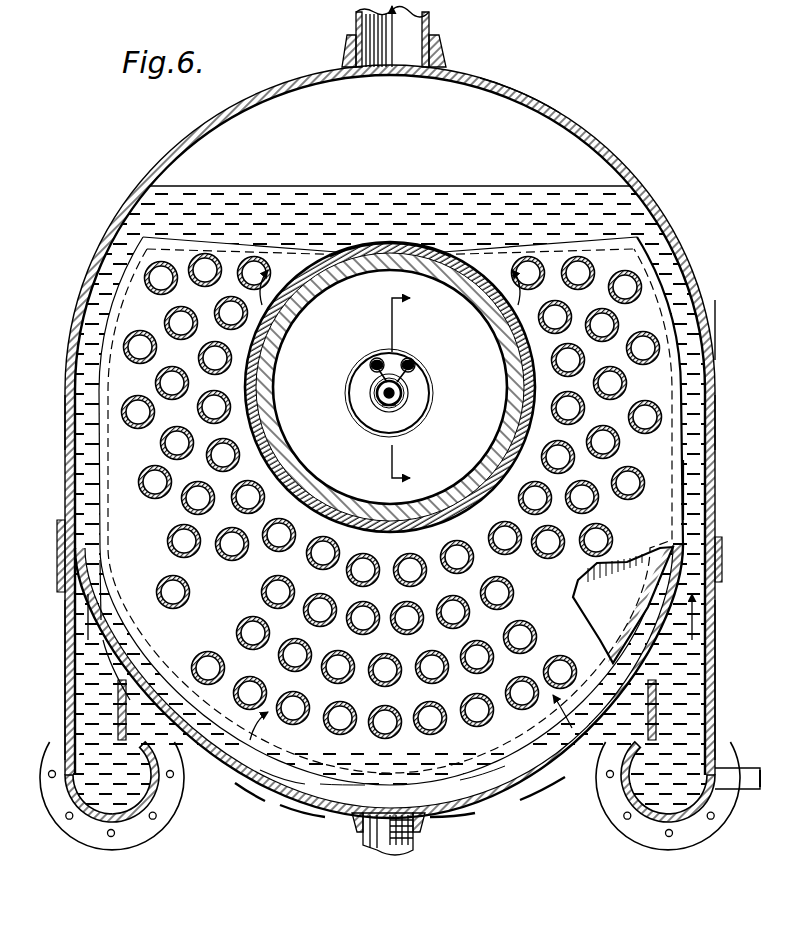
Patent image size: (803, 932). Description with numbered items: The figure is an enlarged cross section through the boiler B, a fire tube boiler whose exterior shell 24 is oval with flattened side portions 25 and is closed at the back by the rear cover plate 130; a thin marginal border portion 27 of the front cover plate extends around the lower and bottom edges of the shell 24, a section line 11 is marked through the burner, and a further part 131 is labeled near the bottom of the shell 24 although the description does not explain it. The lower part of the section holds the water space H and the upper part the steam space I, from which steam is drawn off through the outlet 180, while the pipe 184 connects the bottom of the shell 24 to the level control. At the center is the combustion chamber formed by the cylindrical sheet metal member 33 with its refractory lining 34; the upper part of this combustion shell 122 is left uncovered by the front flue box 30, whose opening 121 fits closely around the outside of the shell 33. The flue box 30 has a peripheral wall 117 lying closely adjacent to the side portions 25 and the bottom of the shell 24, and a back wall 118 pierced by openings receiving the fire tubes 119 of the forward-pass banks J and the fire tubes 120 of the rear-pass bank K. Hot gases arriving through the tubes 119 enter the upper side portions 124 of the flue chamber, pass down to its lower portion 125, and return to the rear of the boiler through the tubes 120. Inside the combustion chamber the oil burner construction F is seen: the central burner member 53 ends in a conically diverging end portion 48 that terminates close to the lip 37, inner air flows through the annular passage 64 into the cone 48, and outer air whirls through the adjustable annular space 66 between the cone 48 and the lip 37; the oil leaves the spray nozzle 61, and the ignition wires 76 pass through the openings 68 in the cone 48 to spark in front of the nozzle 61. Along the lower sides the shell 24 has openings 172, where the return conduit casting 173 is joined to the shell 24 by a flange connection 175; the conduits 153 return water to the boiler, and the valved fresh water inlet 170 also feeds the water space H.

The section line 11- 11 is at (405, 385).
The exterior shell 24 is at (173, 152).
The flattened side portions 25 is at (68, 418).
The marginal border portion 27 is at (692, 330).
The front flue box 30 is at (661, 497).
The cylindrical sheet metal member 33 is at (272, 373).
The refractory lining 34 is at (352, 415).
The lip 37 is at (383, 408).
The conically diverging end portion 48 is at (361, 392).
The central burner member 53 is at (415, 363).
The spray nozzle 61 is at (404, 391).
The annular passage 64 is at (404, 411).
The adjustable annular space 66 is at (419, 405).
The openings 68 is at (405, 360).
The ignition wires 76 is at (370, 366).
The peripheral wall 117 is at (117, 262).
The back wall 118 is at (86, 612).
The fire tubes 119 is at (168, 322).
The fire tubes 120 is at (246, 640).
The opening 121 is at (487, 300).
The upper part of the combustion shell 122 is at (378, 243).
The upper side portions 124 is at (110, 470).
The lower portion 125 is at (484, 760).
The rear cover plate 130 is at (506, 100).
The bottom plate 131 is at (549, 792).
The conduits 153 is at (103, 800).
The fresh water inlet 170 is at (746, 772).
The openings 172 is at (96, 634).
The return conduit casting 173 is at (63, 717).
The flange connection 175 is at (57, 534).
The outlet 180 is at (432, 25).
The pipe 184 is at (378, 844).
The water space H is at (652, 222).
The steam space I is at (560, 150).
The forward-pass fire tubes J is at (135, 541).
The rear-pass fire tubes K is at (340, 770).
The boiler B is at (292, 818).
The oil burner construction F is at (381, 412).